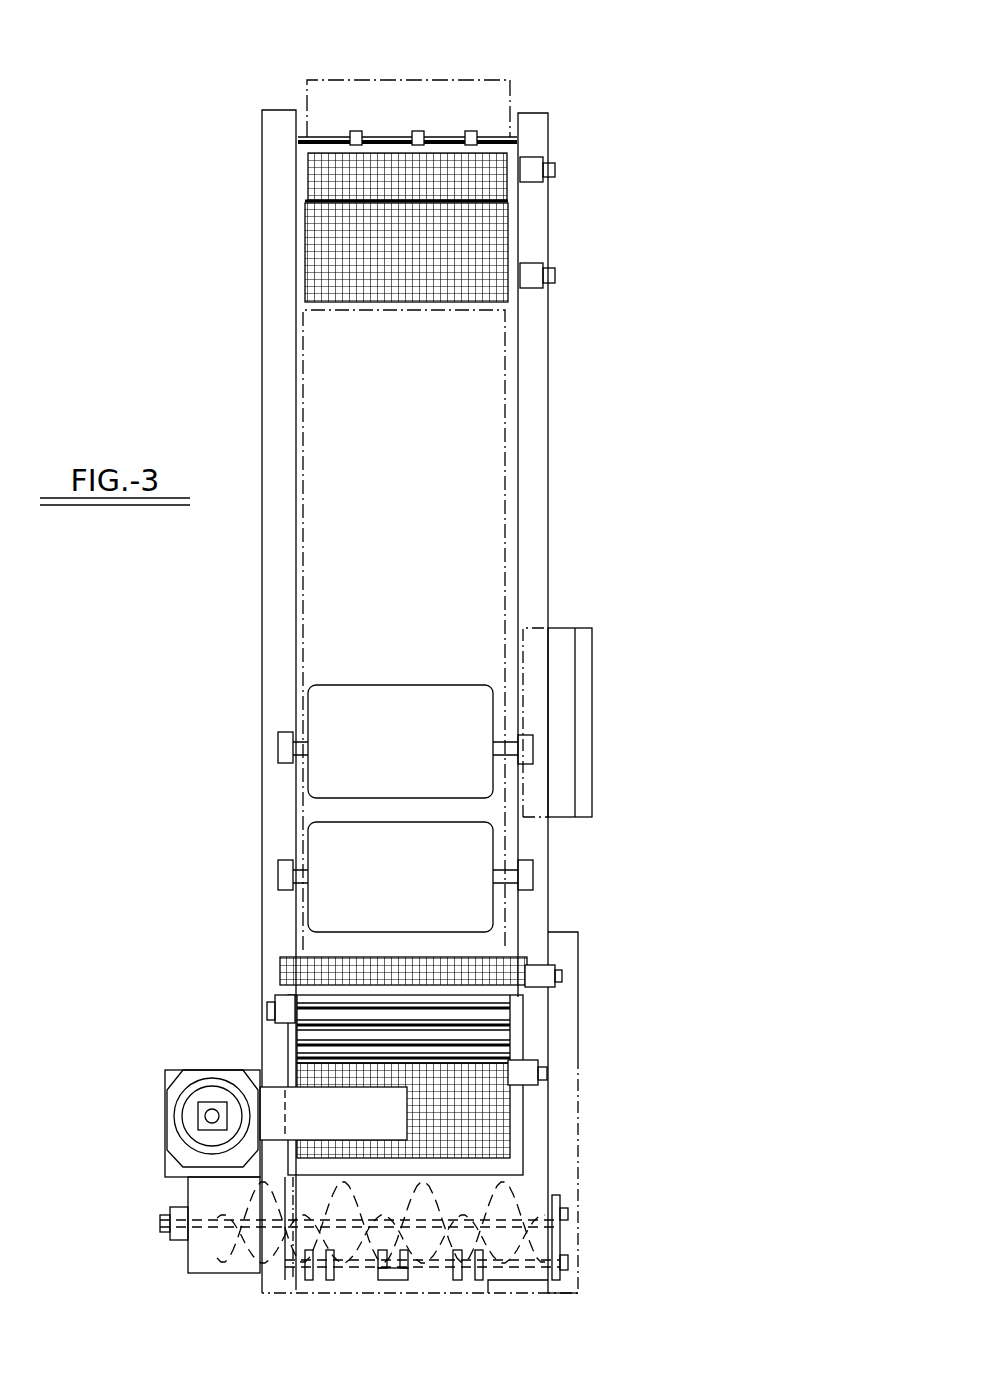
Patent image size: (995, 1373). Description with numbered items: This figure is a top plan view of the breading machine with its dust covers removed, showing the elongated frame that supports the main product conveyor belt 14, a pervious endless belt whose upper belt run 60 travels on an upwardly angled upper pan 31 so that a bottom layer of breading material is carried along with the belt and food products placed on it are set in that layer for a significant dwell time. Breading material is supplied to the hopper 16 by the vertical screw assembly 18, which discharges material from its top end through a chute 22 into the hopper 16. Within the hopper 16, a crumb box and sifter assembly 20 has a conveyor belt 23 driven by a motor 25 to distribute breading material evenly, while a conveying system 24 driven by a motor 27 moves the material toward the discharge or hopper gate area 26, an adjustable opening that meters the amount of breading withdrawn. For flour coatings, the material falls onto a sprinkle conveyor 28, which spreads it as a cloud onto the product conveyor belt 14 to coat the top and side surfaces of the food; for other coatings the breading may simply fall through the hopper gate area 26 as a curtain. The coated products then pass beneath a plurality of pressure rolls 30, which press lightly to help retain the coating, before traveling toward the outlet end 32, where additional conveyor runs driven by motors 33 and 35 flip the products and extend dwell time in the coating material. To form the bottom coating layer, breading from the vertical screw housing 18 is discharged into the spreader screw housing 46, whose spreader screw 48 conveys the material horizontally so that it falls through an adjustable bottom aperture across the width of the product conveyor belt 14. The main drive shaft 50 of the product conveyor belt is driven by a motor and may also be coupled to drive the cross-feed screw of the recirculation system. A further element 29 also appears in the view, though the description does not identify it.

The main product conveyor belt 14 is at (484, 518).
The hopper 16 is at (523, 1140).
The vertical screw assembly 18 is at (202, 1070).
The crumb box and sifter assembly 20 is at (512, 1149).
The chute 22 is at (280, 1097).
The conveyor belt 23 is at (498, 1116).
The conveying system 24 is at (492, 1029).
The motor 25 is at (548, 1078).
The hopper gate area 26 is at (485, 985).
The motor 27 is at (278, 996).
The sprinkle conveyor 28 is at (534, 964).
The side wall 29 is at (514, 573).
The pressure rolls 30 is at (350, 690).
The upper pan 31 is at (391, 132).
The outlet end 32 is at (507, 76).
The motor 33 is at (556, 276).
The motor 35 is at (556, 168).
The spreader screw housing 46 is at (240, 1273).
The spreader screw 48 is at (490, 1285).
The main drive shaft 50 is at (417, 1280).
The upper belt run 60 is at (386, 480).